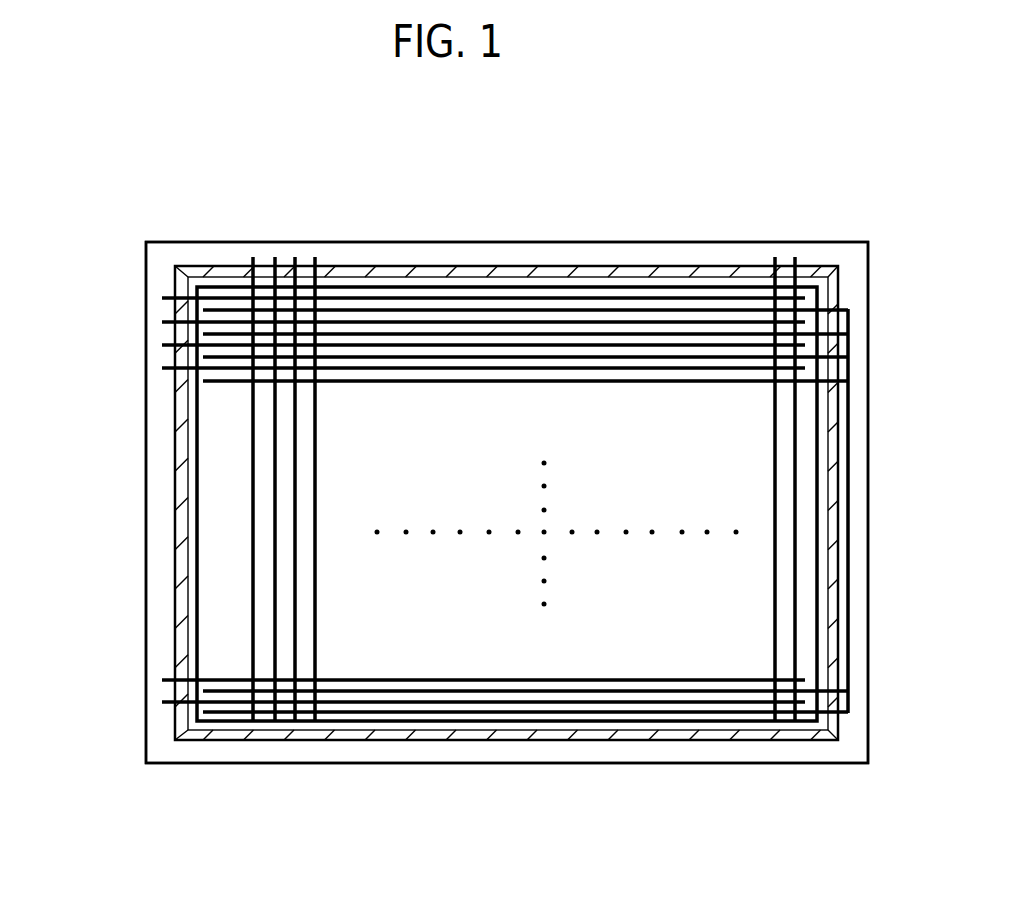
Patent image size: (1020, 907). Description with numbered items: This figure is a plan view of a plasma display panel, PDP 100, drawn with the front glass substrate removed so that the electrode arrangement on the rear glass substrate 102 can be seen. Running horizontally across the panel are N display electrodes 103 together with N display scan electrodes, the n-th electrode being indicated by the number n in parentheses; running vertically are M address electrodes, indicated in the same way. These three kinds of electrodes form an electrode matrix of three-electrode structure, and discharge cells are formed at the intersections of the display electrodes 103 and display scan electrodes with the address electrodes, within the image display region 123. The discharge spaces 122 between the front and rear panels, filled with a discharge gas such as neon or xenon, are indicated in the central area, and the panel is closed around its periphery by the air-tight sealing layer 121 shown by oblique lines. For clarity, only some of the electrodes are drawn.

The PDP 100 is at (932, 496).
The rear glass substrate 102 is at (869, 259).
The display electrodes 103 is at (216, 382).
The air-tight sealing layer 121 is at (492, 273).
The discharge spaces 122 is at (595, 415).
The image display region 123 is at (193, 518).